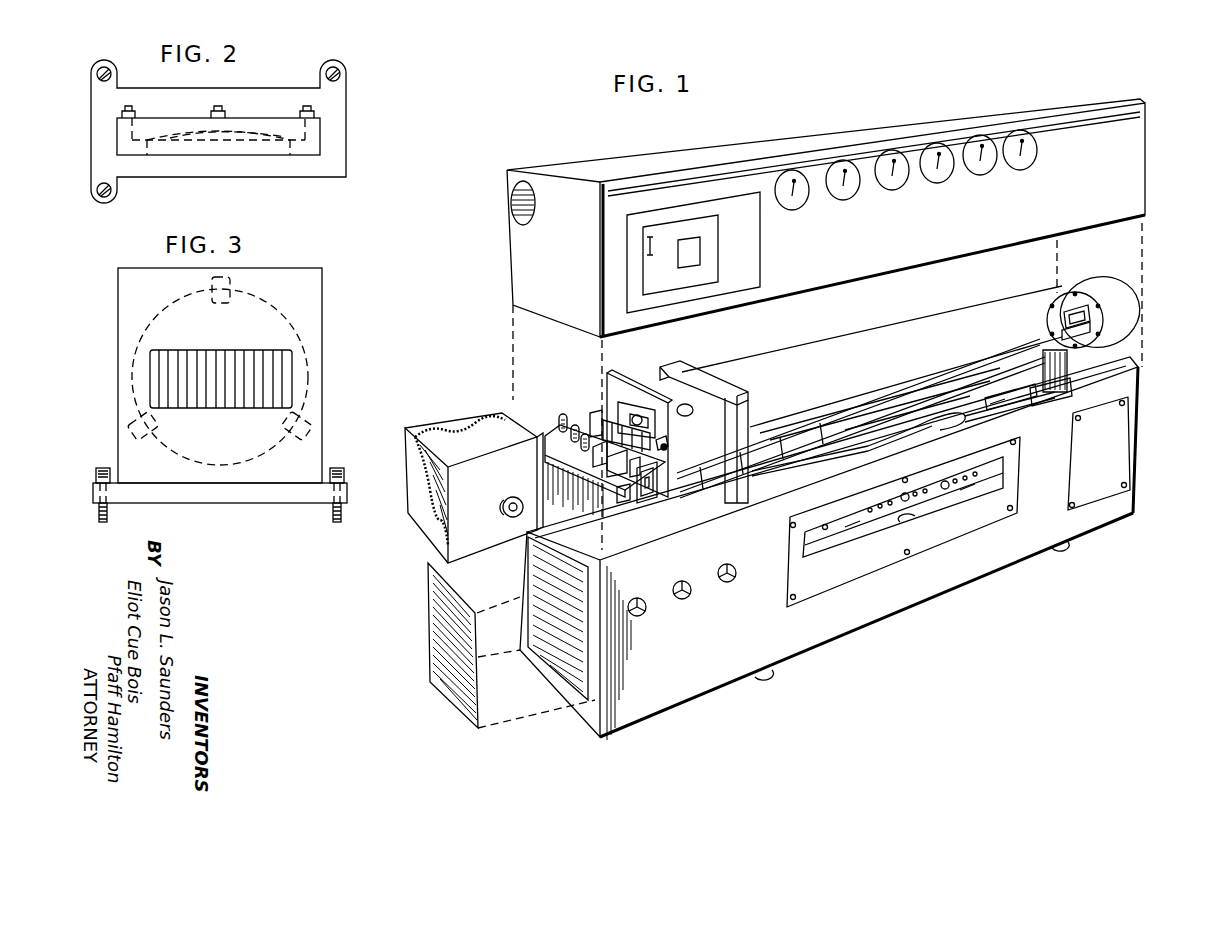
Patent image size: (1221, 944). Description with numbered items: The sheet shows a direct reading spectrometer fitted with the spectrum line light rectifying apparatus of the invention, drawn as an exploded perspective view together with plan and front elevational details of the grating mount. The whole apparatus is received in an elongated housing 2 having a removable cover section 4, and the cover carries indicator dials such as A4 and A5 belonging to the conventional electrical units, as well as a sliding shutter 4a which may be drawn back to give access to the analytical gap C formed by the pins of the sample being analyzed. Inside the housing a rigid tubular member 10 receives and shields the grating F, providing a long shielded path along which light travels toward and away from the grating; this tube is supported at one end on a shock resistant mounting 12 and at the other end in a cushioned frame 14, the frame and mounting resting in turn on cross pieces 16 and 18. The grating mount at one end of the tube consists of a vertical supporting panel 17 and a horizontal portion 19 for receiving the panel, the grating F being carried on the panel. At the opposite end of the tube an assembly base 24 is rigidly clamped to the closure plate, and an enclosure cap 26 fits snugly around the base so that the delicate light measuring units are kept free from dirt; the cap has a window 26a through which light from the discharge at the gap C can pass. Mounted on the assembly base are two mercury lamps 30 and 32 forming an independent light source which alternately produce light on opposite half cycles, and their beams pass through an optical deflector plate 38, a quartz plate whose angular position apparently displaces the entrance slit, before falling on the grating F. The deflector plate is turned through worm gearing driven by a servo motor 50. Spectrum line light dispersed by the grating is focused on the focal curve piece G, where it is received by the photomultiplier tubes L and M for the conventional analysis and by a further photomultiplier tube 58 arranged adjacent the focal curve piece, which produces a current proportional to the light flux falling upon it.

In FIG. 1, the elongated housing 2 is at (967, 563).
In FIG. 1, the removable cover section 4 is at (1130, 180).
In FIG. 1, the sliding shutter 4a is at (705, 272).
In FIG. 1, the indicator dial A4 is at (983, 175).
In FIG. 1, the indicator dial A5 is at (1022, 170).
In FIG. 1, the rigid tubular member 10 is at (887, 343).
In FIG. 1, the shock resistant mounting 12 is at (930, 413).
In FIG. 1, the cushioned frame 14 is at (690, 370).
In FIG. 1, the cross piece 16 is at (760, 493).
In FIG. 2, the vertical supporting panel 17 is at (307, 135).
In FIG. 3, the vertical supporting panel 17 is at (313, 312).
In FIG. 1, the vertical supporting panel 17 is at (1070, 303).
In FIG. 1, the cross piece 18 is at (1055, 387).
In FIG. 2, the horizontal portion 19 is at (333, 157).
In FIG. 3, the horizontal portion 19 is at (293, 495).
In FIG. 1, the horizontal portion 19 is at (1062, 332).
In FIG. 1, the assembly base 24 is at (548, 433).
In FIG. 1, the enclosure cap 26 is at (427, 427).
In FIG. 1, the window 26a is at (510, 500).
In FIG. 1, the mercury lamp 30 is at (660, 440).
In FIG. 1, the mercury lamp 32 is at (667, 446).
In FIG. 1, the optical deflector plate 38 is at (693, 412).
In FIG. 1, the servo motor 50 is at (686, 406).
In FIG. 1, the photomultiplier tube 58 is at (563, 413).
In FIG. 1, the analytical gap C is at (642, 494).
In FIG. 2, the grating F is at (225, 132).
In FIG. 3, the grating F is at (217, 360).
In FIG. 1, the grating F is at (1093, 325).
In FIG. 1, the focal curve piece G is at (590, 413).
In FIG. 1, the photomultiplier tube L is at (573, 447).
In FIG. 1, the photomultiplier tube M is at (585, 450).